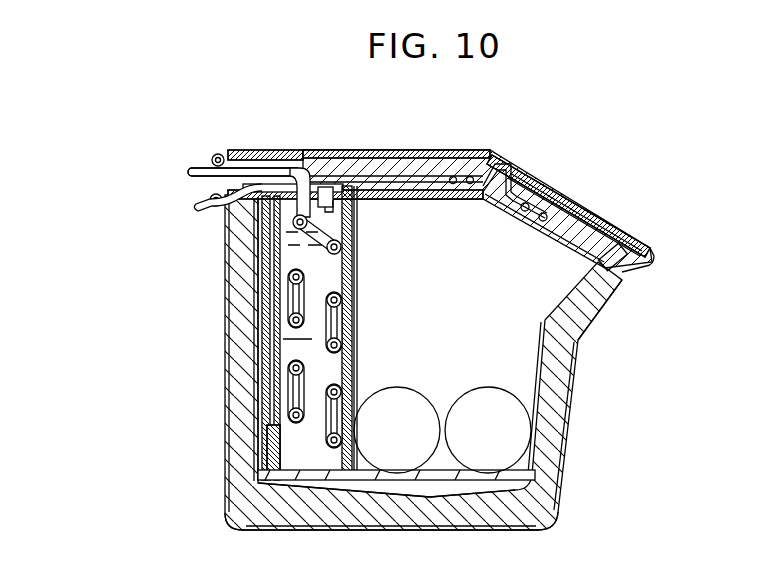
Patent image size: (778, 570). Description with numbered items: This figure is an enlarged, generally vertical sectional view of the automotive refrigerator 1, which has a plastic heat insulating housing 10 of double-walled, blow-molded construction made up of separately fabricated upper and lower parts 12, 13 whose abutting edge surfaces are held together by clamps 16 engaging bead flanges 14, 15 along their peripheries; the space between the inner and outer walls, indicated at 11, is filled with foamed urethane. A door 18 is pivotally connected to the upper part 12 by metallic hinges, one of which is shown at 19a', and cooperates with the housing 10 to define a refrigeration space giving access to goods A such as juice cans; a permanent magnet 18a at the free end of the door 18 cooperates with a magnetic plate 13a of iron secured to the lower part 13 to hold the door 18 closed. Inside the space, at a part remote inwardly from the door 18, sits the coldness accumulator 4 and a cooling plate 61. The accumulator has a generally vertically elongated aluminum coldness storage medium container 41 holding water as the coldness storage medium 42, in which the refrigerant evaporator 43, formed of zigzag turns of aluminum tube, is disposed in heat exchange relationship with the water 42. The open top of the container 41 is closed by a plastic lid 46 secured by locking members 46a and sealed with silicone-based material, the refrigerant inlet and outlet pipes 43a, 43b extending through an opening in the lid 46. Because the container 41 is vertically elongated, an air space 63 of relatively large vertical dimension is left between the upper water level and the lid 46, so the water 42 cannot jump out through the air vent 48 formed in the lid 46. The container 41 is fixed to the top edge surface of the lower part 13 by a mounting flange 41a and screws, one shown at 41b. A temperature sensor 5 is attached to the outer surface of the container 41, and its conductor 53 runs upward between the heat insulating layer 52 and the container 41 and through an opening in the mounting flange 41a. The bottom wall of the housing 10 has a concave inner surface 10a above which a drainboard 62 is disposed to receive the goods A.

The refrigerator 1 is at (429, 100).
The coldness accumulator 4 is at (358, 353).
The temperature sensor 5 is at (272, 433).
The heat insulating housing 10 is at (580, 372).
The concave inner surface 10a is at (437, 500).
The heat insulating material 11 is at (427, 165).
The upper part 12 is at (484, 153).
The lower part 13 is at (556, 514).
The magnetic plate 13a is at (625, 278).
The bead flange 14 is at (216, 158).
The bead flange 15 is at (220, 207).
The clamp 16 is at (218, 165).
The door 18 is at (603, 216).
The permanent magnet 18a is at (640, 263).
The metallic hinge 19a' is at (544, 192).
The coldness storage medium container 41 is at (349, 300).
The mounting flange 41a is at (262, 262).
The screw 41b is at (258, 186).
The coldness storage medium 42 is at (310, 278).
The refrigerant evaporator 43 is at (340, 252).
The refrigerant inlet pipe 43a is at (200, 170).
The refrigerant outlet pipe 43b is at (244, 172).
The lid 46 is at (318, 190).
The locking member 46a is at (292, 170).
The air vent 48 is at (333, 189).
The heat insulating layer 52 is at (272, 350).
The conductor 53 is at (284, 316).
The cooling plate 61 is at (448, 178).
The drainboard 62 is at (545, 478).
The air space 63 is at (336, 222).
The goods A is at (540, 406).